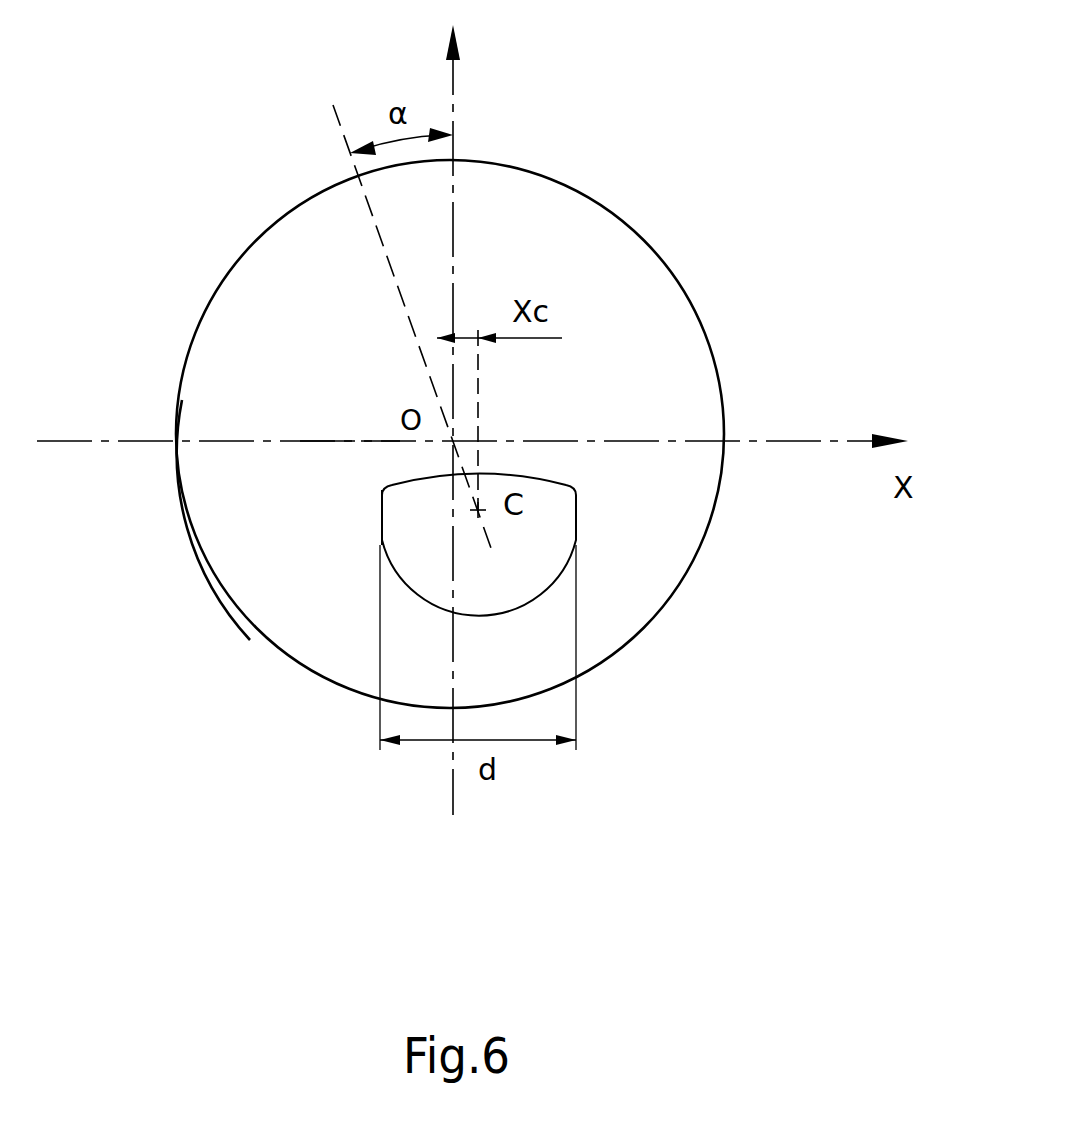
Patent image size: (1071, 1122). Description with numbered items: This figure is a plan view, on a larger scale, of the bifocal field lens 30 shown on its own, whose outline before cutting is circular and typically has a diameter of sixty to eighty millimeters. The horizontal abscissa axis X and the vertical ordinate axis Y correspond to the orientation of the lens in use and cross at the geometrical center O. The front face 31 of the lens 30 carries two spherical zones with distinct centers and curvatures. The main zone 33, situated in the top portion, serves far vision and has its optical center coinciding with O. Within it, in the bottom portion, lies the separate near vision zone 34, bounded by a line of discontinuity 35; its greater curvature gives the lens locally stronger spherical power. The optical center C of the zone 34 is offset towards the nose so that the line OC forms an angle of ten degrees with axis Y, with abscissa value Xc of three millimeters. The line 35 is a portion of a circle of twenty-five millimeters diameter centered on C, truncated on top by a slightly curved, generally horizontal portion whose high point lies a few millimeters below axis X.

The lens 30 is at (672, 140).
The front face 31 is at (245, 536).
The main zone 33 is at (326, 355).
The near vision zone 34 is at (514, 590).
The line of discontinuity 35 is at (381, 520).